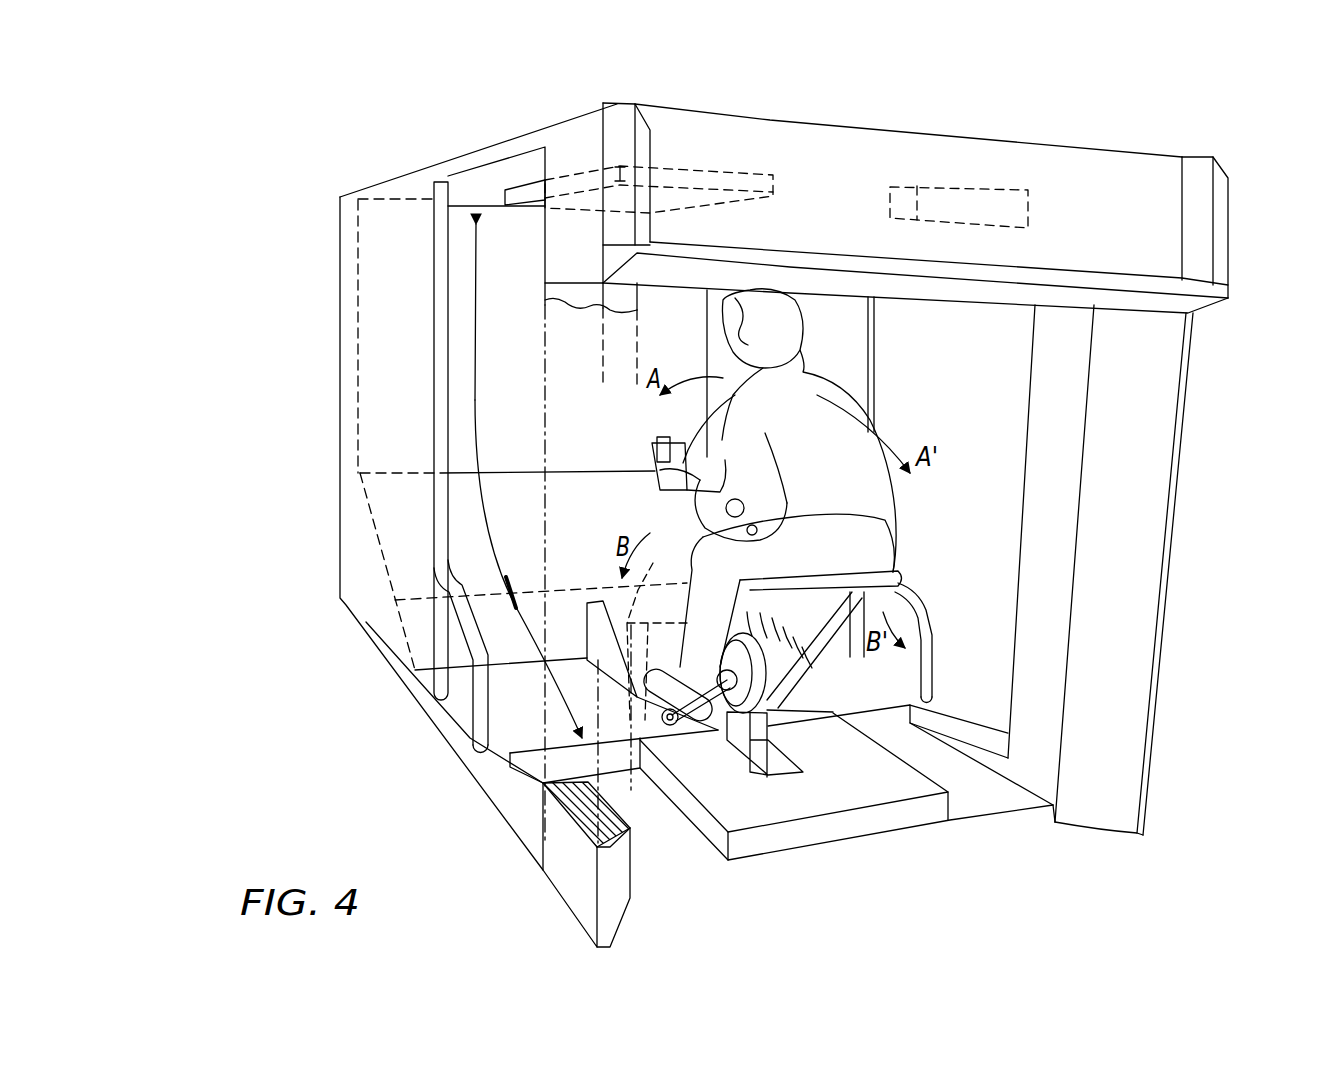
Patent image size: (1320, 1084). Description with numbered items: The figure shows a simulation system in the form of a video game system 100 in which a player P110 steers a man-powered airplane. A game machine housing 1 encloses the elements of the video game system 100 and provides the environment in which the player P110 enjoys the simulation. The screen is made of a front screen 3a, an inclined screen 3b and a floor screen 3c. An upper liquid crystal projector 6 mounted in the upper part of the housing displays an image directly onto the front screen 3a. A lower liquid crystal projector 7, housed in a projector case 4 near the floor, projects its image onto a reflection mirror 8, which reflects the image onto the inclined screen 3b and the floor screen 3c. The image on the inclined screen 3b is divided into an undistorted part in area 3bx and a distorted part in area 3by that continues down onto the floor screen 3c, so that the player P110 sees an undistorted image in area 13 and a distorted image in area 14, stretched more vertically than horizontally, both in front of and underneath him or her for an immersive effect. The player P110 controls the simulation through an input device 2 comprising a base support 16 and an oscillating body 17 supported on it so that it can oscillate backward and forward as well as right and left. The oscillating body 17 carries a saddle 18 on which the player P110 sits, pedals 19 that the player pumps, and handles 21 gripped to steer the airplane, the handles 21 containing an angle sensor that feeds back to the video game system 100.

The game machine housing 1 is at (343, 184).
The video game system 100 is at (1173, 143).
The reflection mirror 8 is at (720, 175).
The upper liquid crystal projector 6 is at (967, 197).
The undistorted image area 13 is at (480, 360).
The distorted image area 14 is at (540, 675).
The front screen 3a is at (378, 333).
The inclined screen 3b is at (268, 524).
The undistorted image area of inclined screen 3bx is at (407, 553).
The distorted image area of inclined screen 3by is at (413, 617).
The floor screen 3c is at (510, 728).
The player P110 is at (825, 382).
The handles 21 is at (653, 438).
The input device 2 is at (647, 503).
The projector case 4 is at (615, 613).
The lower liquid crystal projector 7 is at (653, 562).
The saddle 18 is at (892, 575).
The oscillating body 17 is at (807, 653).
The pedals 19 is at (682, 723).
The base support 16 is at (850, 833).